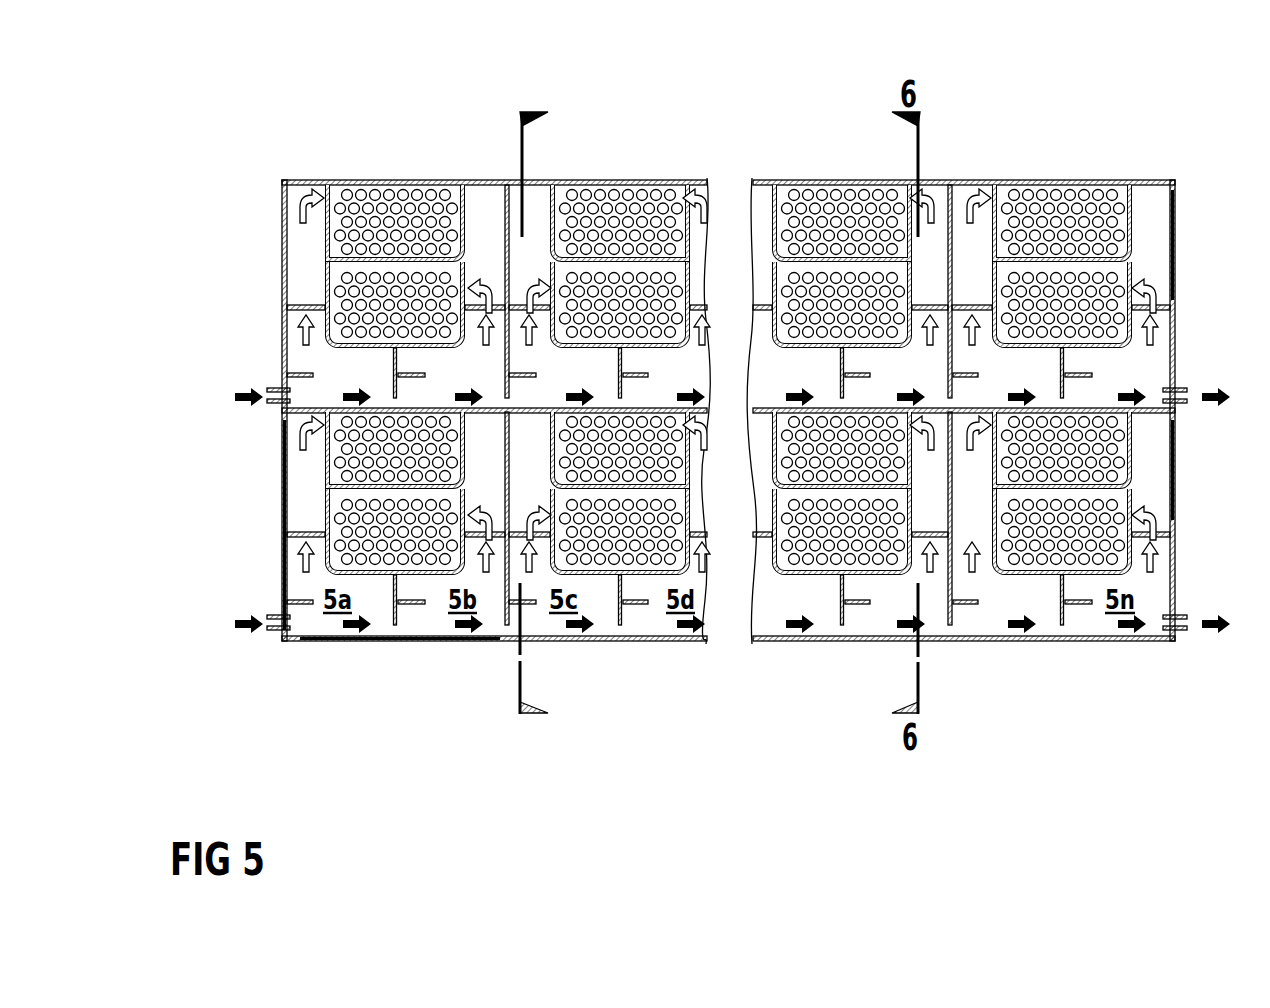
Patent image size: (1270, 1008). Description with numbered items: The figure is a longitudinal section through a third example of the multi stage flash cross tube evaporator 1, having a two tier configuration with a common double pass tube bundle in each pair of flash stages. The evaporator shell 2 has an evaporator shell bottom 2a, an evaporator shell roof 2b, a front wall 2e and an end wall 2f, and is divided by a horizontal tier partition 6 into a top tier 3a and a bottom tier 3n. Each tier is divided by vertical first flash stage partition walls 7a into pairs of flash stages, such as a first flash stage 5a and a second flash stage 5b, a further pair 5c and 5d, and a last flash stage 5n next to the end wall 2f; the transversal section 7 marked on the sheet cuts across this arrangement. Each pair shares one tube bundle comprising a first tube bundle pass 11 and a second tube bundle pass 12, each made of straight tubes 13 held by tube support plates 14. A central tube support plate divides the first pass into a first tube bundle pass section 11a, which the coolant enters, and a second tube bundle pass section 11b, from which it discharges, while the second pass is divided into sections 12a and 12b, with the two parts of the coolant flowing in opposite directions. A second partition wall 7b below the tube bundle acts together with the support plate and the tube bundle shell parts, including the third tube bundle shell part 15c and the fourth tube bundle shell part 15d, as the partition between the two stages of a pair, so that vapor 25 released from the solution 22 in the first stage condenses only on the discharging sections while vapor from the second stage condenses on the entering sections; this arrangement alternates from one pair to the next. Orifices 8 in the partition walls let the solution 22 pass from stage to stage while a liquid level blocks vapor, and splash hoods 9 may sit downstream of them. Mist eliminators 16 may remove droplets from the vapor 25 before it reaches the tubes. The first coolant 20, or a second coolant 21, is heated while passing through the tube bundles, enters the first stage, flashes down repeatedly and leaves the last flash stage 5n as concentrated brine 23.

The evaporator 1 is at (284, 240).
The evaporator shell 2 is at (1172, 200).
The evaporator shell bottom 2a is at (1103, 642).
The evaporator shell roof 2b is at (968, 215).
The front wall 2e is at (283, 498).
The end wall 2f is at (1176, 494).
The top tier 3a is at (1177, 235).
The bottom tier 3n is at (1176, 526).
The first flash stage 5a is at (352, 386).
The second flash stage 5b is at (477, 386).
The first flash stage 5c is at (578, 386).
The second flash stage 5d is at (695, 386).
The last flash stage 5n is at (1135, 386).
The horizontal tier partition 6 is at (312, 432).
The section line / partition wall 7 is at (535, 419).
The first flash stage partition wall 7a is at (482, 628).
The second partition wall 7b is at (840, 597).
The orifice 8 is at (527, 636).
The splash hood 9 is at (552, 632).
The first tube bundle pass 11 is at (806, 205).
The first tube bundle pass section 11a is at (621, 208).
The second tube bundle pass section 11b is at (366, 205).
The second tube bundle pass 12 is at (847, 280).
The first tube bundle pass section 12a is at (418, 280).
The second tube bundle pass section 12b is at (678, 317).
The straight tube 13 is at (666, 215).
The tube support plate 14 is at (948, 212).
The third tube bundle shell part 15c is at (530, 288).
The fourth tube bundle shell part 15d is at (706, 318).
The mist eliminator 16 is at (503, 300).
The first coolant 20 is at (241, 483).
The second coolant 21 is at (259, 390).
The solution 22 is at (362, 645).
The concentrated brine 23 is at (1219, 389).
The vapor 25 is at (302, 337).